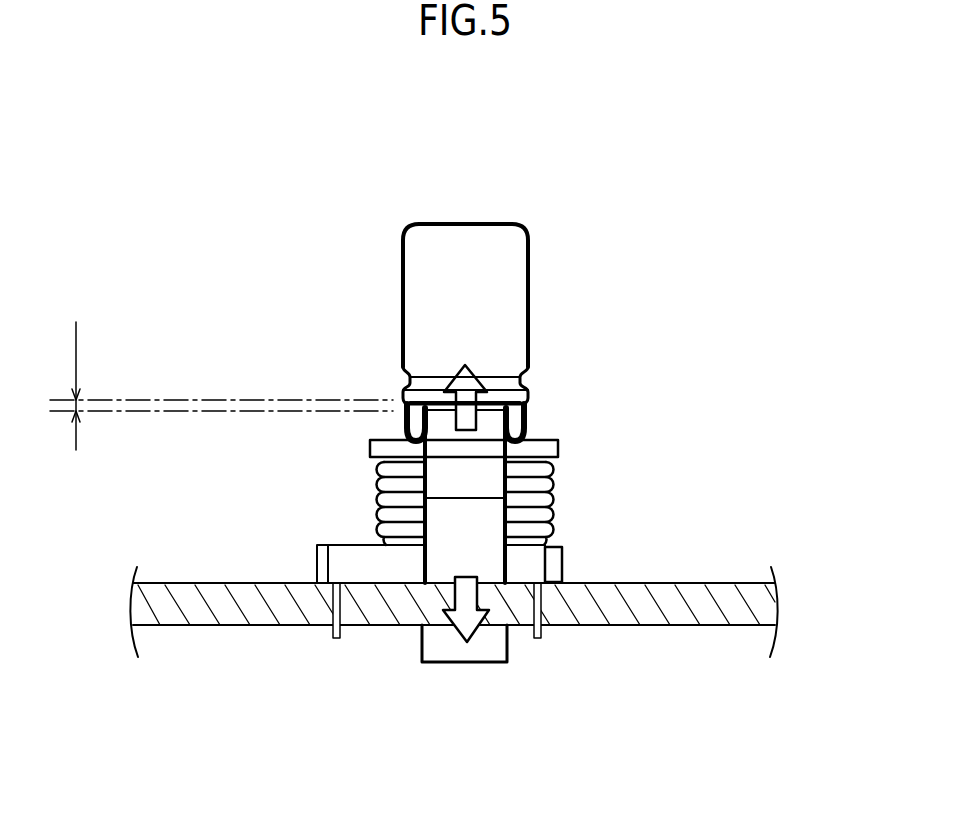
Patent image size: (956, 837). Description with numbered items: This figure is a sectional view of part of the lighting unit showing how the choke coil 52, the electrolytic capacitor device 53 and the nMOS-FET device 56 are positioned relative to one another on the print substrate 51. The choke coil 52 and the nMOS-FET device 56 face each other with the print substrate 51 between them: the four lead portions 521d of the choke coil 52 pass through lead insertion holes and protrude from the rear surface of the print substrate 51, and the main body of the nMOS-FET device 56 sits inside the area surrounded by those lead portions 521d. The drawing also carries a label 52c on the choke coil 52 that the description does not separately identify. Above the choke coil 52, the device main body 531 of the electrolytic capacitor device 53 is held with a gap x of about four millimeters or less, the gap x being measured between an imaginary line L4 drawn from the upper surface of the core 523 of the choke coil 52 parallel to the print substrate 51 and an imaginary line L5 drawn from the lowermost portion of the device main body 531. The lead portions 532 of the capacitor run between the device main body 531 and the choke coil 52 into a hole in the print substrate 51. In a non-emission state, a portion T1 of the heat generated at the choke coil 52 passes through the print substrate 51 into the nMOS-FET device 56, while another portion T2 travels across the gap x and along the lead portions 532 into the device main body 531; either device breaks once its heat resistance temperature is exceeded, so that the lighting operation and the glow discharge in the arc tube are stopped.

The print substrate 51 is at (682, 605).
The choke coil 52 is at (509, 505).
The engaging projection of nozzle unit 52c is at (563, 558).
The lead portions 521d is at (333, 640).
The core 523 is at (490, 457).
The electrolytic capacitor device 53 is at (588, 332).
The device main body 531 is at (495, 298).
The lead portions 532 is at (413, 405).
The nMOS-FET device 56 is at (485, 662).
The portion of heat T1 is at (462, 623).
The another portion of heat T2 is at (462, 414).
The imaginary line L4 is at (222, 411).
The imaginary line L5 is at (213, 400).
The gap x is at (61, 386).